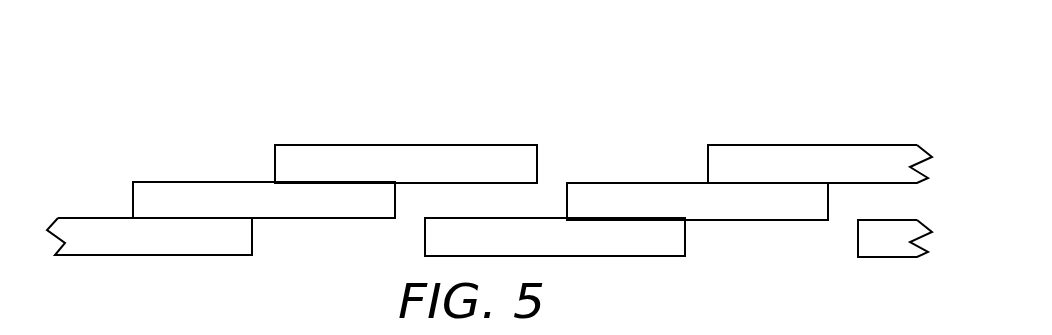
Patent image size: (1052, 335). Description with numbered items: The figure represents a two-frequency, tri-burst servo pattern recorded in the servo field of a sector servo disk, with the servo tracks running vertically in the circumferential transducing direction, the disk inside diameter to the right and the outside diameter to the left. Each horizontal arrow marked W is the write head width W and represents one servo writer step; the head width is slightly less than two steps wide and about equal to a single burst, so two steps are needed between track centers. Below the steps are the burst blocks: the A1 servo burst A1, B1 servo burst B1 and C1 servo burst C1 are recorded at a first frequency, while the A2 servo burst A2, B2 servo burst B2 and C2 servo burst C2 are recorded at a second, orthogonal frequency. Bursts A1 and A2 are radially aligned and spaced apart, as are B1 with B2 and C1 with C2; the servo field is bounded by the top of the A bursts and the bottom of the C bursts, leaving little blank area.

The write head width W is at (520, 32).
The A1 servo burst A1 is at (406, 164).
The A2 servo burst A2 is at (820, 164).
The B1 servo burst B1 is at (697, 201).
The B2 servo burst B2 is at (264, 200).
The C1 servo burst C1 is at (489, 237).
The C2 servo burst C2 is at (555, 237).